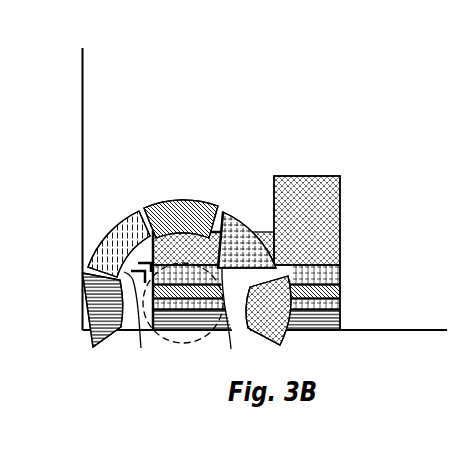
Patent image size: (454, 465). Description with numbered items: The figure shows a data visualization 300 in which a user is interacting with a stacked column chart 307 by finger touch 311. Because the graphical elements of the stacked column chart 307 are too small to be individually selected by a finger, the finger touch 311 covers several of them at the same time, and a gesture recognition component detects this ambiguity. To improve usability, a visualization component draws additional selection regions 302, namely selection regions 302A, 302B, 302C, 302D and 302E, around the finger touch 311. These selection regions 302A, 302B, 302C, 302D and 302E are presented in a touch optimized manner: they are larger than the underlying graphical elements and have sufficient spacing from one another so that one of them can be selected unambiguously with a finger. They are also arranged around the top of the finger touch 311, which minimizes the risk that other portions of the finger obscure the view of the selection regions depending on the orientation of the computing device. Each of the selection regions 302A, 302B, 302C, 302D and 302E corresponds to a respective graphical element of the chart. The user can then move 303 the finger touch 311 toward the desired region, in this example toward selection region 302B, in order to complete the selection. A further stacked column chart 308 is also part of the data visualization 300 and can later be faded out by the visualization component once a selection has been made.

The data visualization 300 is at (152, 95).
The selection regions 302 is at (65, 210).
The selection region 302A is at (82, 310).
The selection region 302B is at (103, 246).
The selection region 302C is at (181, 206).
The selection region 302D is at (225, 212).
The selection region 302E is at (283, 343).
The move 303 is at (140, 335).
The stacked column chart 307 is at (231, 326).
The stacked column chart 308 is at (340, 262).
The finger touch 311 is at (195, 343).